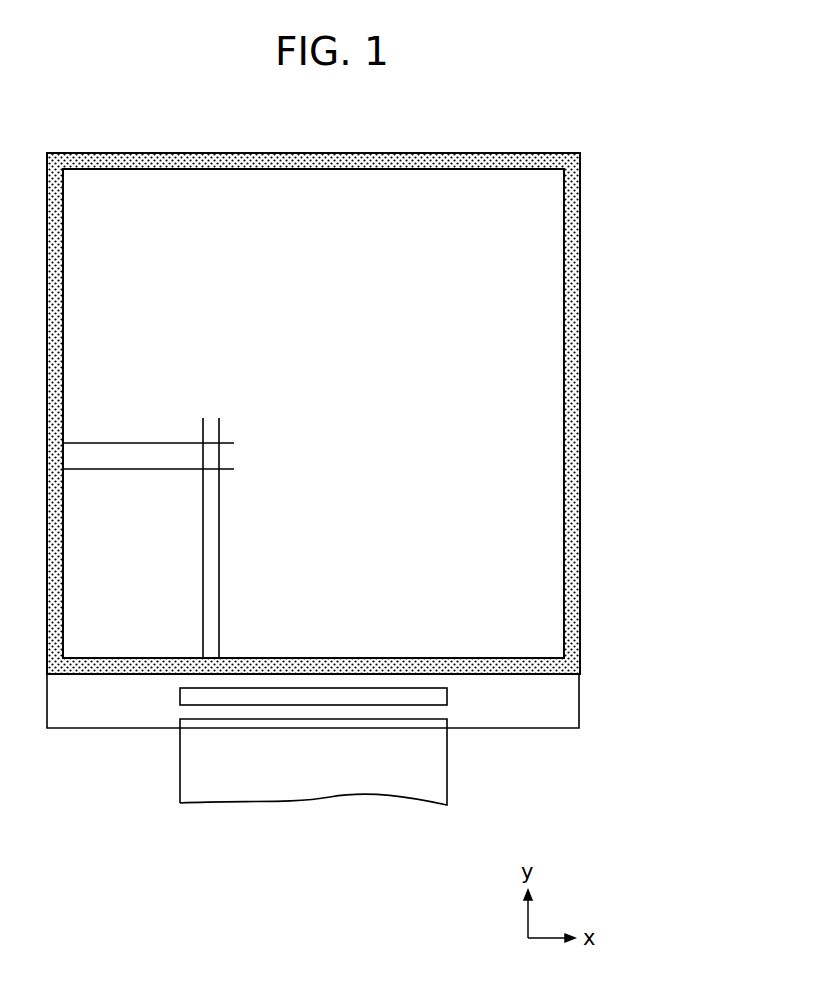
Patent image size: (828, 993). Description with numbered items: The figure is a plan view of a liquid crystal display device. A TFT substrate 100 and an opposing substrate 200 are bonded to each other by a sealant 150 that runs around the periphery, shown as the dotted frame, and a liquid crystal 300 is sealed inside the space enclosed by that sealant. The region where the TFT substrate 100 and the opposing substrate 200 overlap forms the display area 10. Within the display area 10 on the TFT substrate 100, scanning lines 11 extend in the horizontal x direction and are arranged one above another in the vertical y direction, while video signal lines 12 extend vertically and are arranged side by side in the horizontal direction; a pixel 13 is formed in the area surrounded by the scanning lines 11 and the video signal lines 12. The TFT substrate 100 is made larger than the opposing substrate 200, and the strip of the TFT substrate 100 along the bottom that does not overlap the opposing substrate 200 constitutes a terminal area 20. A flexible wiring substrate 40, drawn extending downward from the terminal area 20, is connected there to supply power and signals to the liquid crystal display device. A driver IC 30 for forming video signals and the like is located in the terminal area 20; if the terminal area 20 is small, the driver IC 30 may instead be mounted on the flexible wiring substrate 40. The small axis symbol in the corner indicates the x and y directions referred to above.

The display area 10 is at (523, 268).
The liquid crystal 300 is at (371, 413).
The sealant 150 is at (573, 342).
The scanning lines 11 is at (127, 440).
The video signal lines 12 is at (219, 537).
The pixel 13 is at (210, 457).
The TFT substrate 100 is at (579, 719).
The opposing substrate 200 is at (547, 673).
The driver IC 30 is at (183, 693).
The flexible wiring substrate 40 is at (195, 773).
The terminal area 20 is at (537, 718).